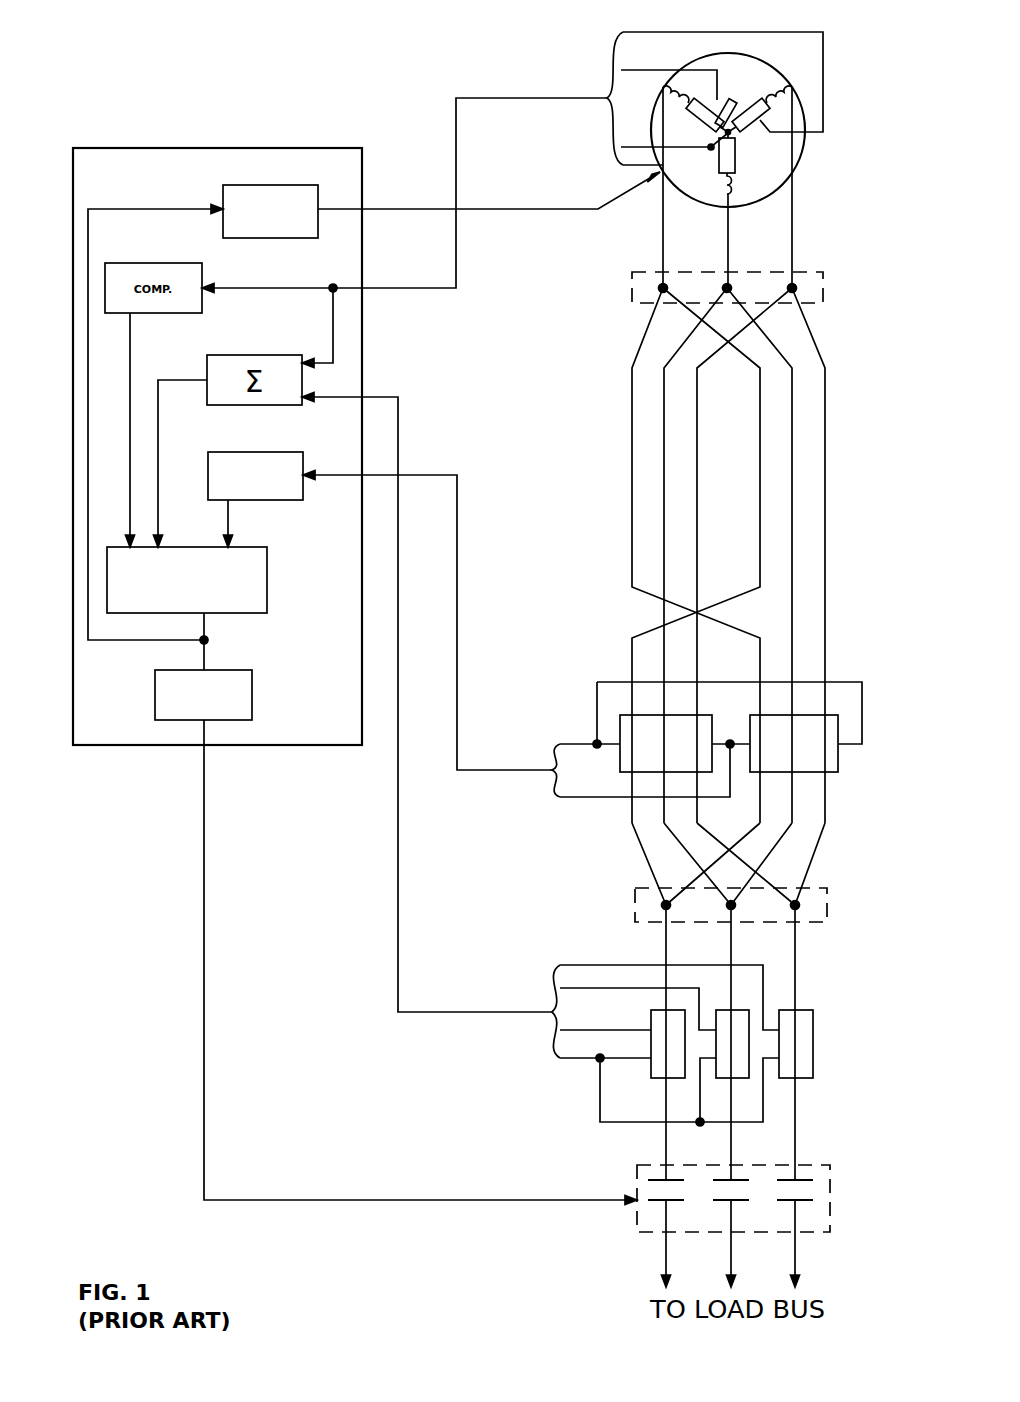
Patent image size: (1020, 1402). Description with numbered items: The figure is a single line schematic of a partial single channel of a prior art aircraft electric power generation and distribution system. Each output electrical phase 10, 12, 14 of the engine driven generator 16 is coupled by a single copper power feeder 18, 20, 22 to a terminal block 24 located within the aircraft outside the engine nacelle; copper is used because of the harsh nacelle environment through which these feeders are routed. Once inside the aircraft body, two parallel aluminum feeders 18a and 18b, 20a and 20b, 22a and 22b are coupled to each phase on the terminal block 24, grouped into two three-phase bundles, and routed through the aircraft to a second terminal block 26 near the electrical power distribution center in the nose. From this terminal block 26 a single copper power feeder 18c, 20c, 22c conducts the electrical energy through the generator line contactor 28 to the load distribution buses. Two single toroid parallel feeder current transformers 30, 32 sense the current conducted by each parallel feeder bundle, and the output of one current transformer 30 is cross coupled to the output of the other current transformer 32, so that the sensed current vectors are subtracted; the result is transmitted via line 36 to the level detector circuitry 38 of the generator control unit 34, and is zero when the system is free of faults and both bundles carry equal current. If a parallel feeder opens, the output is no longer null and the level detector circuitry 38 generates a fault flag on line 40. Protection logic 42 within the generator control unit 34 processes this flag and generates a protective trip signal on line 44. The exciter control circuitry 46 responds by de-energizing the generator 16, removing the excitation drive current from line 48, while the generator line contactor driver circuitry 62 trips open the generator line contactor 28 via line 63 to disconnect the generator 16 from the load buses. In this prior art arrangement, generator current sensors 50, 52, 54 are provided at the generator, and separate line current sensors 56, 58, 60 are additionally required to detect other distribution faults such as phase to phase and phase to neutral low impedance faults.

The output electrical phase 10 is at (777, 80).
The output electrical phase 12 is at (679, 32).
The output electrical phase 14 is at (745, 193).
The engine driven generator 16 is at (806, 140).
The copper power feeder 18 is at (656, 246).
The copper power feeder 20 is at (722, 246).
The copper power feeder 22 is at (800, 246).
The terminal block 24 is at (830, 290).
The second terminal block 26 is at (832, 905).
The generator line contactor 28 is at (835, 1185).
The parallel feeder current transformer 30 is at (623, 712).
The parallel feeder current transformer 32 is at (833, 777).
The generator control unit 34 is at (273, 148).
The line 36 is at (460, 587).
The level detector circuitry 38 is at (275, 452).
The line 40 is at (230, 522).
The protection logic 42 is at (267, 582).
The line 44 is at (130, 209).
The exciter control circuitry 46 is at (273, 185).
The line 48 is at (520, 209).
The generator current sensor 50 is at (744, 100).
The generator current sensor 52 is at (714, 102).
The generator current sensor 54 is at (741, 155).
The line current sensor 56 is at (656, 1010).
The line current sensor 58 is at (745, 1005).
The line current sensor 60 is at (816, 1043).
The generator line contactor driver circuitry 62 is at (252, 688).
The line 63 is at (210, 977).
The parallel aluminum feeder 18a is at (632, 497).
The parallel aluminum feeder 18b is at (765, 497).
The copper power feeder 18c is at (660, 1145).
The parallel aluminum feeder 20a is at (664, 458).
The parallel aluminum feeder 20b is at (800, 458).
The copper power feeder 20c is at (740, 1145).
The parallel aluminum feeder 22a is at (697, 418).
The parallel aluminum feeder 22b is at (833, 418).
The copper power feeder 22c is at (800, 1145).